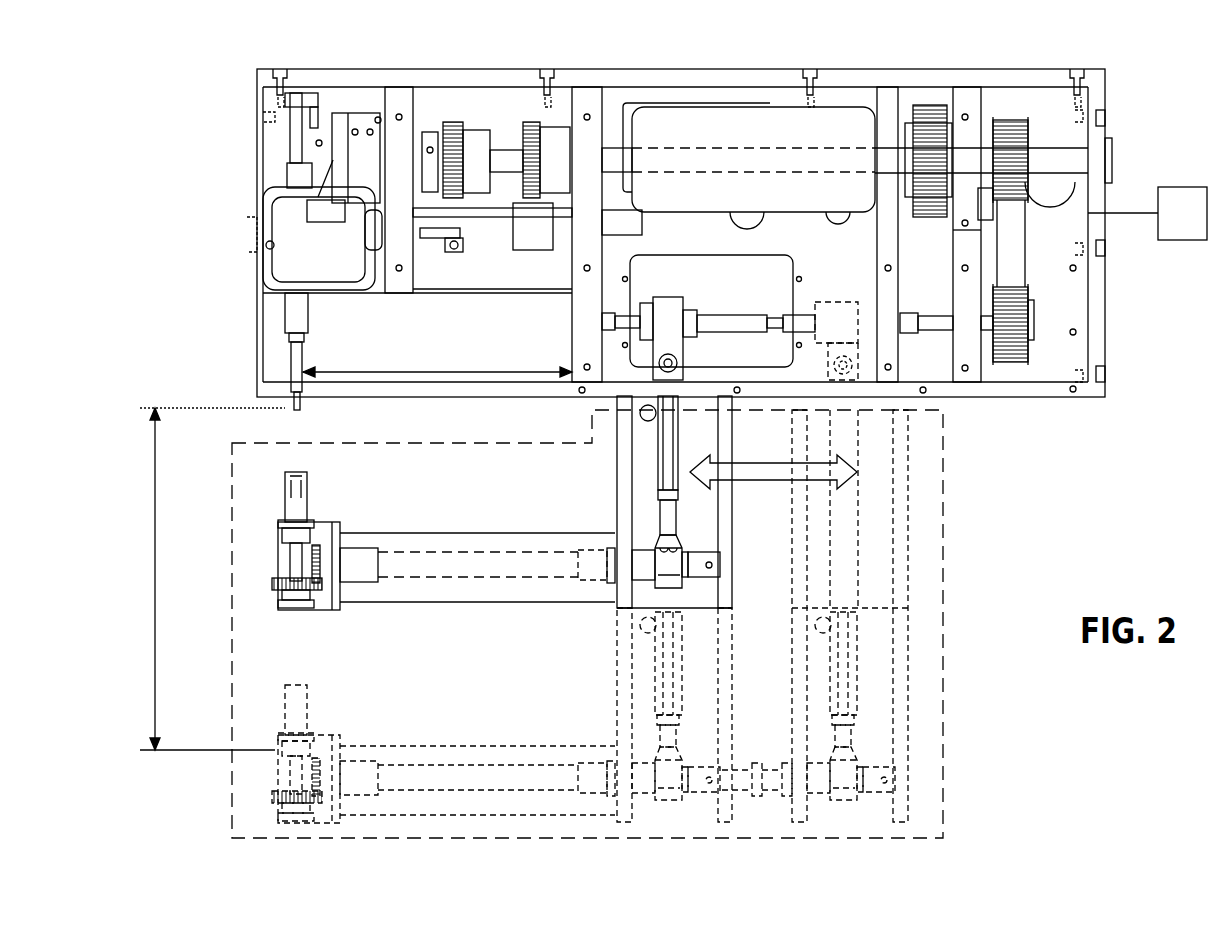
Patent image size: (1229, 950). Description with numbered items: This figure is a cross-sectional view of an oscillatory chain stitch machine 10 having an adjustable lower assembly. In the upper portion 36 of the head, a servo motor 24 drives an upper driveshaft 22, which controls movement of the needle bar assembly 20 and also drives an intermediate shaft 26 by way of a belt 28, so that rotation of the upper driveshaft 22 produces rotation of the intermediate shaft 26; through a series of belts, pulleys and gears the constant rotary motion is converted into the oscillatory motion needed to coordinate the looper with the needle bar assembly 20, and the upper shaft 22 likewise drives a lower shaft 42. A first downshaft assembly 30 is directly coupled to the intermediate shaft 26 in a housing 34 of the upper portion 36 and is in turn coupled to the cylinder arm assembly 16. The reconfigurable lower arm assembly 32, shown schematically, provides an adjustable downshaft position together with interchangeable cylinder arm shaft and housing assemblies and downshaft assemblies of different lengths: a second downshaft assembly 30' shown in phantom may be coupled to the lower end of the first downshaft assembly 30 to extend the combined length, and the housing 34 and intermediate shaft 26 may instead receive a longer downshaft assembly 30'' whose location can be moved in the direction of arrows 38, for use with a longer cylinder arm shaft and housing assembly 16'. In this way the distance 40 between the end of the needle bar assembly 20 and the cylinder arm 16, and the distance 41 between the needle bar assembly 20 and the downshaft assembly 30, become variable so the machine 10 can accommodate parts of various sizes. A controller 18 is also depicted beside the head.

The oscillatory chain stitch machine 10 is at (927, 58).
The upper portion 36 is at (586, 82).
The housing 34 is at (546, 399).
The needle bar assembly 20 is at (305, 237).
The distance 41 is at (458, 372).
The motor 24 is at (777, 107).
The upper driveshaft 22 is at (700, 160).
The intermediate shaft 26 is at (737, 322).
The belt 28 is at (1013, 262).
The controller 18 is at (1192, 232).
The distance 40 is at (155, 585).
The reconfigurable lower arm assembly 32 is at (943, 745).
The cylinder arm assembly 16 is at (443, 532).
The lower shaft 42 is at (413, 562).
The cylinder arm shaft and housing assembly 16' is at (443, 744).
The downshaft assembly 30 is at (639, 502).
The second downshaft assembly 30' is at (666, 715).
The longer downshaft assembly 30'' is at (906, 616).
The arrows 38 is at (763, 495).